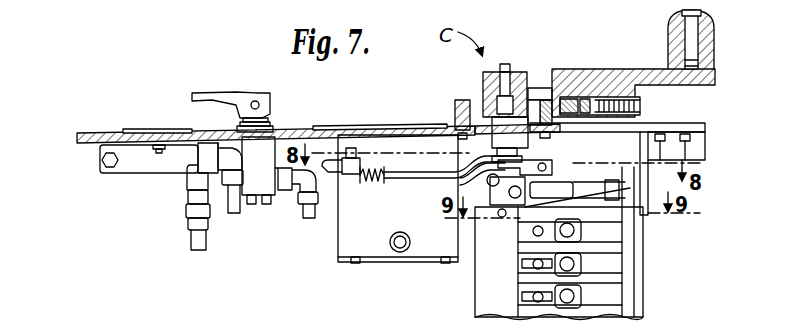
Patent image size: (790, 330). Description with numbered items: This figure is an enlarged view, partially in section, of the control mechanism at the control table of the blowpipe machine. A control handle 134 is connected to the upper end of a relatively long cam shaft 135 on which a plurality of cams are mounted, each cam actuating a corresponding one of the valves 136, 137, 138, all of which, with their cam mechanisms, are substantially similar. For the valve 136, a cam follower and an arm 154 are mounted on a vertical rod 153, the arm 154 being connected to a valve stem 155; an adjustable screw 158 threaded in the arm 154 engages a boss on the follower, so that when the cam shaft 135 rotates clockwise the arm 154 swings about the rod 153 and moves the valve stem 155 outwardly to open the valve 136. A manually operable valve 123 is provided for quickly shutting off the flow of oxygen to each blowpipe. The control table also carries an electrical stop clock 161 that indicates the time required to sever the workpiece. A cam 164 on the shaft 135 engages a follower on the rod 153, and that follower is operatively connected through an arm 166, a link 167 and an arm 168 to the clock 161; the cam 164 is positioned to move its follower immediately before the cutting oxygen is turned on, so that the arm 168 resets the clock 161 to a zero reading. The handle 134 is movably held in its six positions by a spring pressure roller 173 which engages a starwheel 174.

The manually operable valve 123 is at (238, 92).
The control handle 134 is at (670, 28).
The cam shaft 135 is at (500, 152).
The valve 136 is at (613, 235).
The valve 137 is at (607, 264).
The valve 138 is at (605, 293).
The vertical rod 153 is at (552, 160).
The arm 154 is at (530, 297).
The valve stem 155 is at (580, 260).
The adjustable screw 158 is at (533, 262).
The electrical stop clock 161 is at (353, 230).
The cam 164 is at (628, 136).
The arm 166 is at (558, 195).
The link 167 is at (411, 180).
The arm 168 is at (340, 152).
The spring pressure roller 173 is at (558, 99).
The starwheel 174 is at (542, 100).